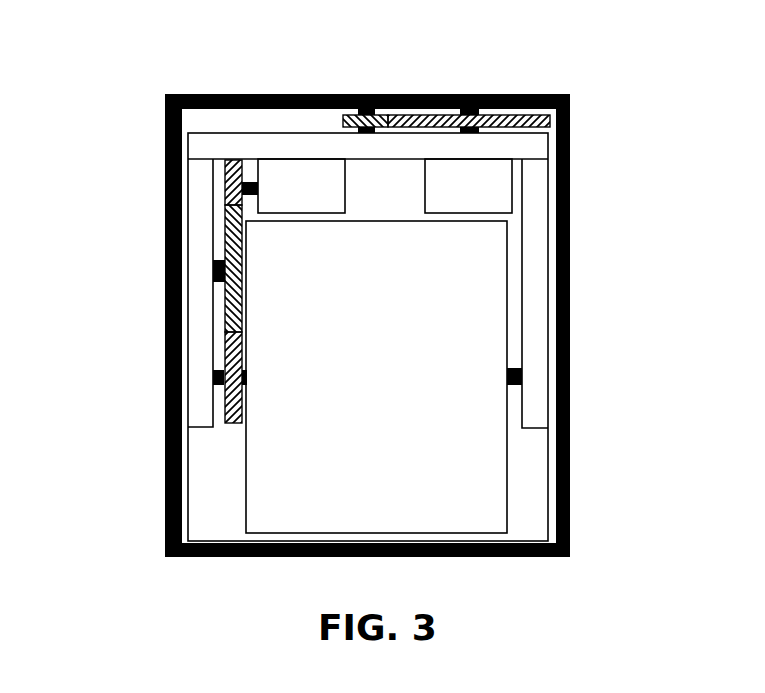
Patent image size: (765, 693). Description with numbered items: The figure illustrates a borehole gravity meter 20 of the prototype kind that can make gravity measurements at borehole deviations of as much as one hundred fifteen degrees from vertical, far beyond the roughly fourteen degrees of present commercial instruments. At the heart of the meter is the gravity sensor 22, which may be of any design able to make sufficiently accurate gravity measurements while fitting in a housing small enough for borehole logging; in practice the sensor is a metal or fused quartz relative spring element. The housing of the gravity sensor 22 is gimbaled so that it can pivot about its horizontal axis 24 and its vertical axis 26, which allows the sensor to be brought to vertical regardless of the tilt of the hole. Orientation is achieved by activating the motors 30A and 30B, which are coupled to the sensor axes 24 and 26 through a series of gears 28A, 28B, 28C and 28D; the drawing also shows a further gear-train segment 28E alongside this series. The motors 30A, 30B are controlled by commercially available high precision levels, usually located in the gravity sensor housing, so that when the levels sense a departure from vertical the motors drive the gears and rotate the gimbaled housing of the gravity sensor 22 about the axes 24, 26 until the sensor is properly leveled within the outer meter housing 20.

The borehole gravity meter 20 is at (165, 530).
The gravity sensor 22 is at (315, 482).
The horizontal axis 24 is at (215, 378).
The vertical axis 26 is at (365, 109).
The gear 28A is at (226, 349).
The gear 28B is at (226, 297).
The gear 28C is at (227, 173).
The gear 28D is at (350, 120).
The top electrode 28E is at (520, 125).
The motor 30A is at (295, 199).
The motor 30B is at (475, 202).